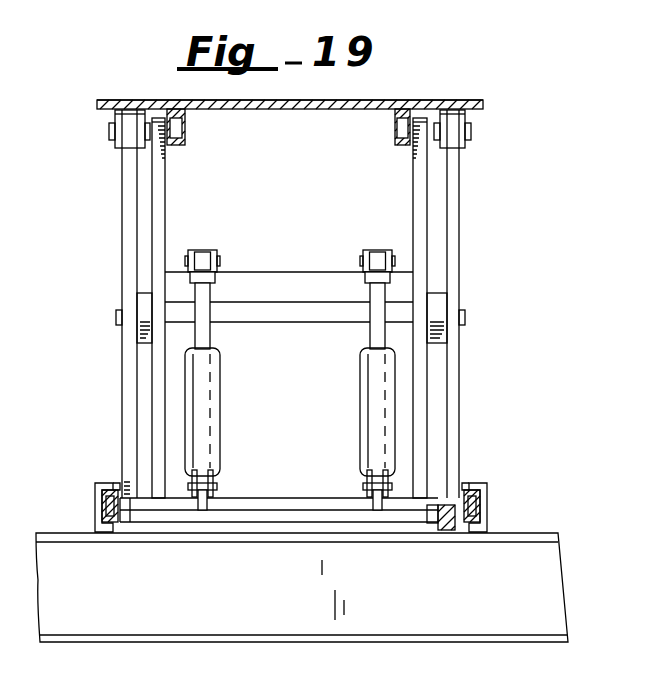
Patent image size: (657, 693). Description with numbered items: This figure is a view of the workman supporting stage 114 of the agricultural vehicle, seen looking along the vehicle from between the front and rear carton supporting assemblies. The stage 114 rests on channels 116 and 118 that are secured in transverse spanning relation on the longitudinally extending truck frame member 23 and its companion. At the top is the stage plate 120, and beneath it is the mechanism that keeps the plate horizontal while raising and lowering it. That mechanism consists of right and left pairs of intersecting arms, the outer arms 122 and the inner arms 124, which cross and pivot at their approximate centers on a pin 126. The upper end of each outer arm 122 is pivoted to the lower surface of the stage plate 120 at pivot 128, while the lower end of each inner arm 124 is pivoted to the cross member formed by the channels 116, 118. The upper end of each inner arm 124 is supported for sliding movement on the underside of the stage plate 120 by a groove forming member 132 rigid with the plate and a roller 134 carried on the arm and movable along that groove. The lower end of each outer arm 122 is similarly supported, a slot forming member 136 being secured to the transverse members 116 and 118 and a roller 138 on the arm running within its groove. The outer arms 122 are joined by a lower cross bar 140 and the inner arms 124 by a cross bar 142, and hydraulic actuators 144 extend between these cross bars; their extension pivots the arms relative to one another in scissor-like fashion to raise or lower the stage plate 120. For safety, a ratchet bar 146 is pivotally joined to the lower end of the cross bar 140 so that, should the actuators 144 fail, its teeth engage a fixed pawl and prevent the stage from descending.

The longitudinally extending frame member 23 is at (555, 566).
The workman supporting stage 114 is at (432, 97).
The channel 116 is at (95, 487).
The channel 118 is at (487, 486).
The stage plate 120 is at (273, 102).
The outer arm 122 is at (122, 226).
The inner arm 124 is at (166, 196).
The pin 126 is at (466, 320).
The pivot 128 is at (110, 138).
The groove forming member 132 is at (186, 126).
The roller 134 is at (182, 138).
The slot forming member 136 is at (108, 484).
The roller 138 is at (101, 505).
The lower cross bar 140 is at (263, 499).
The cross bar 142 is at (250, 280).
The hydraulic actuator 144 is at (221, 433).
The ratchet bar 146 is at (452, 531).